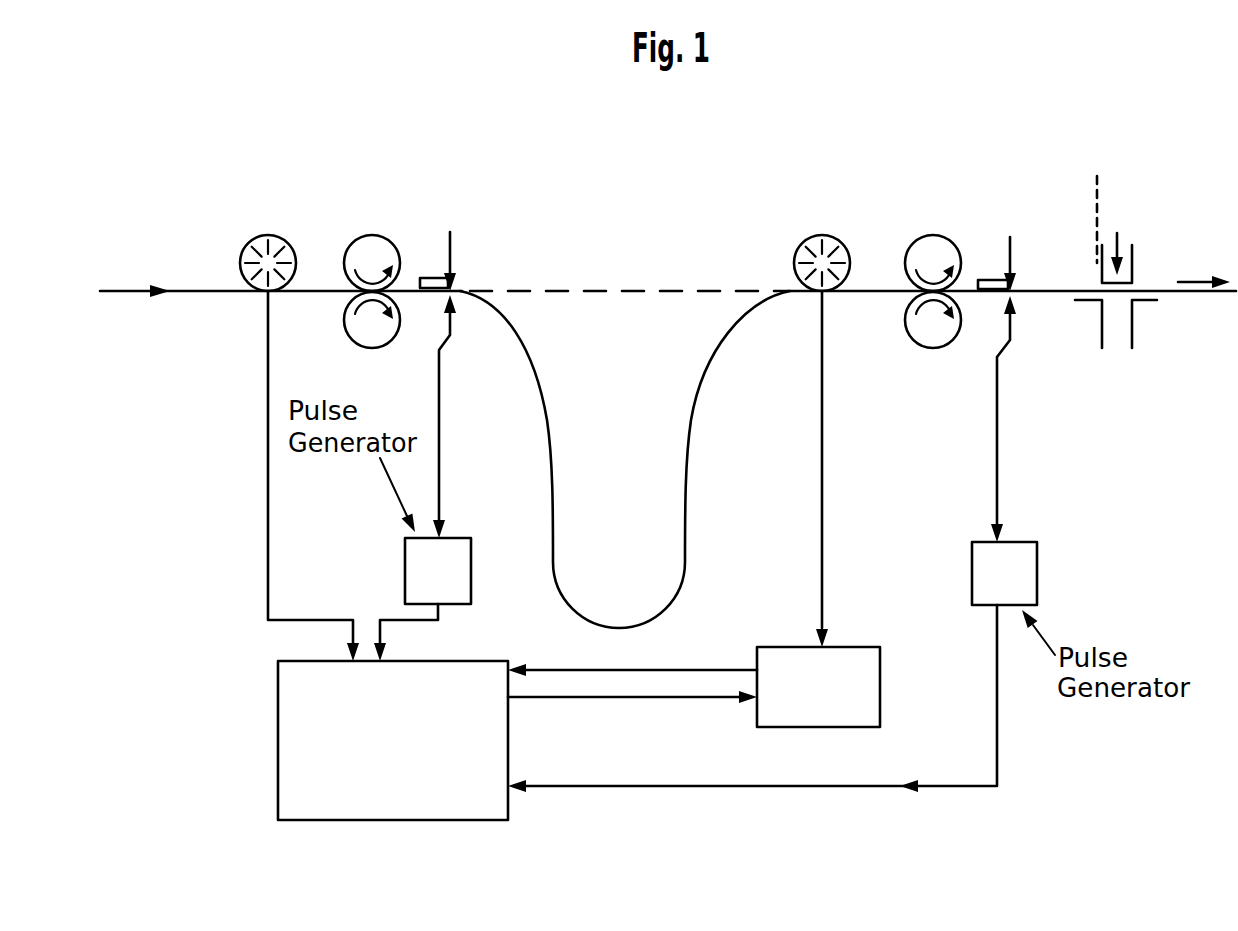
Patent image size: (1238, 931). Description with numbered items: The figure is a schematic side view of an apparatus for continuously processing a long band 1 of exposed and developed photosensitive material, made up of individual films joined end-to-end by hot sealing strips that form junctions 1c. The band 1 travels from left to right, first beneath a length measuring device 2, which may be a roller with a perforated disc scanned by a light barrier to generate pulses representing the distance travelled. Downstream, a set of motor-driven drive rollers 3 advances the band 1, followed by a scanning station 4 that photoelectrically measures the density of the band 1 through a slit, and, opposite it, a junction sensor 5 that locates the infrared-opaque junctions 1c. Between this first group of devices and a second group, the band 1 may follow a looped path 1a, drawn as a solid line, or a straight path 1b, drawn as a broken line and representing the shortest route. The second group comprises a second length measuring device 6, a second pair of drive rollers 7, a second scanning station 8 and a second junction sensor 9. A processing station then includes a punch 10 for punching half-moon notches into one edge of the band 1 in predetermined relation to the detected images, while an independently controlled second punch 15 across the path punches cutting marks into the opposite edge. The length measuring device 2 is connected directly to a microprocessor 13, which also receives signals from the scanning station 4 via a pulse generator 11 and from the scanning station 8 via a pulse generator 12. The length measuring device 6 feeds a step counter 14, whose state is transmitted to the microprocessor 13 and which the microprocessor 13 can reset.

The band 1 is at (180, 291).
The looped path 1a is at (556, 505).
The straight path 1b is at (631, 291).
The junctions 1c is at (434, 278).
The length measuring device 2 is at (248, 250).
The drive rollers 3 is at (352, 250).
The scanning station 4 is at (450, 324).
The junction sensor 5 is at (455, 238).
The second length measuring device 6 is at (797, 248).
The second drive rollers 7 is at (912, 248).
The second scanning station 8 is at (997, 368).
The second junction sensor 9 is at (1013, 240).
The punch 10 is at (1130, 256).
The pulse generator 11 is at (413, 554).
The pulse generator 12 is at (1033, 567).
The microprocessor 13 is at (288, 760).
The step counter 14 is at (852, 653).
The second punch 15 is at (1099, 204).